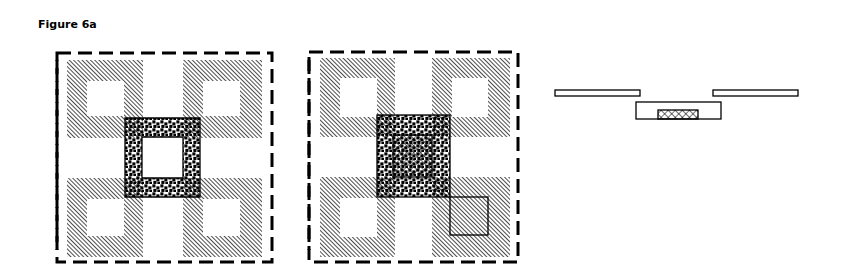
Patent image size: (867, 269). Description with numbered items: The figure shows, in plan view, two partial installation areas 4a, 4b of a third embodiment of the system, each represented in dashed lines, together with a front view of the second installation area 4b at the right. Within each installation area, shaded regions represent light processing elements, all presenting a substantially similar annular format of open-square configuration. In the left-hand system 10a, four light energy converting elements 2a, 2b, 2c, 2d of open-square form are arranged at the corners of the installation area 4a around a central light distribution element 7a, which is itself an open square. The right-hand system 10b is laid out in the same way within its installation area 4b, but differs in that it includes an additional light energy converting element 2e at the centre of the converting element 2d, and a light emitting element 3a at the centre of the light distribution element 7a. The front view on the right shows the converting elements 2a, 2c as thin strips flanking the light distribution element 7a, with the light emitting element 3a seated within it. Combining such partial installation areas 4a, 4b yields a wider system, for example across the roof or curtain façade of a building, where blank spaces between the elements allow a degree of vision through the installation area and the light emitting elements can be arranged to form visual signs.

The system 10a is at (164, 150).
The system 10b is at (413, 149).
The installation area 4a is at (44, 155).
The installation area 4b is at (296, 155).
The light energy converting element 2a is at (353, 98).
The light energy converting element 2b is at (231, 217).
The light energy converting element 2c is at (490, 98).
The light energy converting element 2d is at (346, 211).
The light energy converting element 2e is at (469, 216).
The light distribution element 7a is at (423, 141).
The light emitting element 3a is at (545, 143).